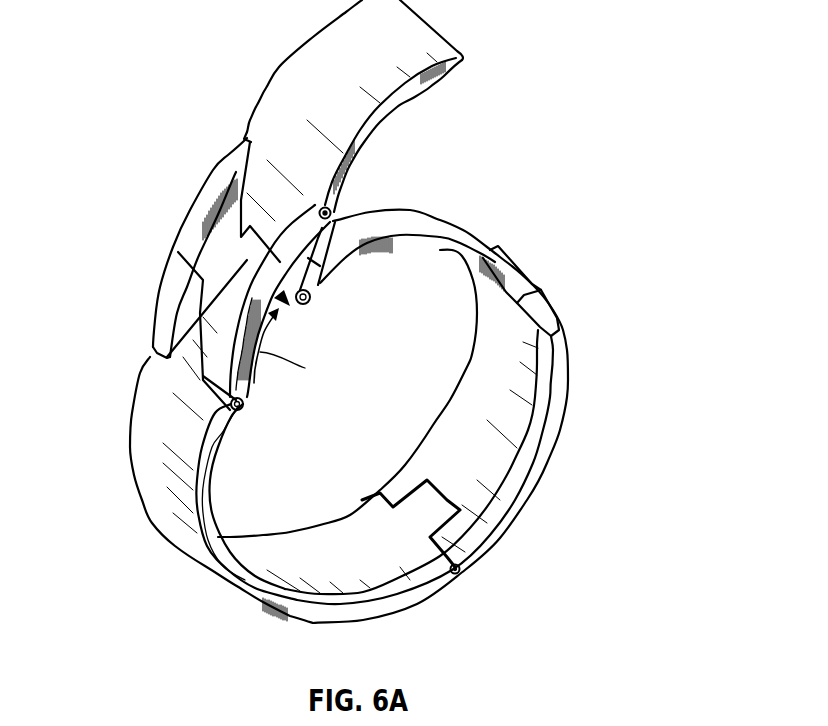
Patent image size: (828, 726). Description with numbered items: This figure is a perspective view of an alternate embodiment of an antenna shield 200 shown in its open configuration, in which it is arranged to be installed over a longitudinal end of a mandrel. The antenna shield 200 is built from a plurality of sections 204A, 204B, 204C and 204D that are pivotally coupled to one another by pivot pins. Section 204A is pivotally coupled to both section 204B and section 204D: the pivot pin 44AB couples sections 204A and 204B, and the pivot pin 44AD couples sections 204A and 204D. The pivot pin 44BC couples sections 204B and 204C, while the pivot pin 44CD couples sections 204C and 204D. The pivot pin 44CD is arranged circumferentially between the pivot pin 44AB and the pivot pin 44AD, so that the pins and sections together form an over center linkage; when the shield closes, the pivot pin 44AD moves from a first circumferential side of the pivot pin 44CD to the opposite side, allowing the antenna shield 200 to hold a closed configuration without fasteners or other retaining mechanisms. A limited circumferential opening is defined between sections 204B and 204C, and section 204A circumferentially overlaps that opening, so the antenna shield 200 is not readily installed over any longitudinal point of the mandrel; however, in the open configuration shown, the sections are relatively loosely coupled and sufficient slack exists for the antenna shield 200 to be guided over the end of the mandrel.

The antenna shield 200 is at (565, 70).
The section 204A is at (173, 272).
The section 204B is at (170, 517).
The section 204C is at (557, 400).
The section 204D is at (373, 137).
The pivot pin 44AB is at (244, 407).
The pivot pin 44BC is at (456, 574).
The pivot pin 44CD is at (311, 302).
The pivot pin 44AD is at (332, 212).